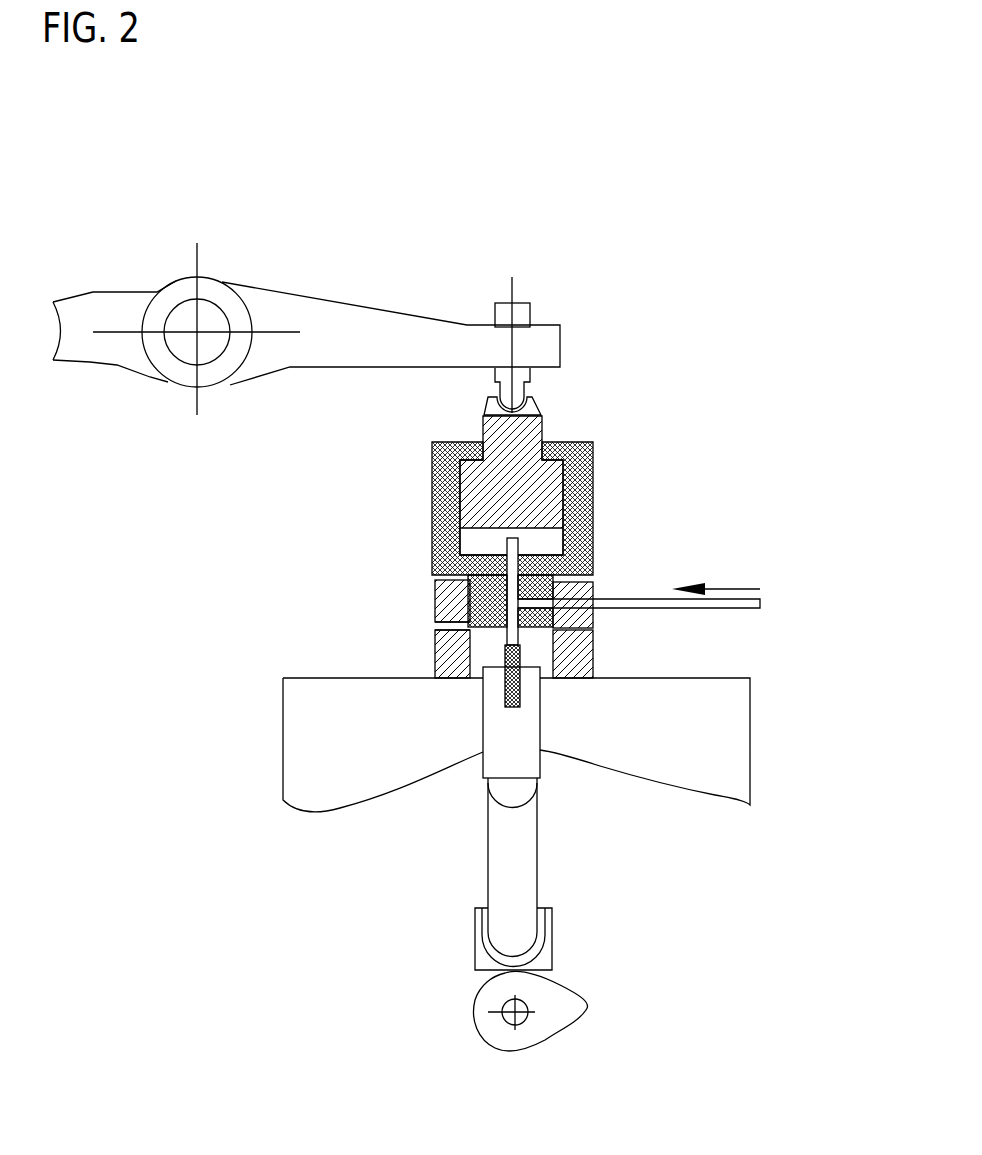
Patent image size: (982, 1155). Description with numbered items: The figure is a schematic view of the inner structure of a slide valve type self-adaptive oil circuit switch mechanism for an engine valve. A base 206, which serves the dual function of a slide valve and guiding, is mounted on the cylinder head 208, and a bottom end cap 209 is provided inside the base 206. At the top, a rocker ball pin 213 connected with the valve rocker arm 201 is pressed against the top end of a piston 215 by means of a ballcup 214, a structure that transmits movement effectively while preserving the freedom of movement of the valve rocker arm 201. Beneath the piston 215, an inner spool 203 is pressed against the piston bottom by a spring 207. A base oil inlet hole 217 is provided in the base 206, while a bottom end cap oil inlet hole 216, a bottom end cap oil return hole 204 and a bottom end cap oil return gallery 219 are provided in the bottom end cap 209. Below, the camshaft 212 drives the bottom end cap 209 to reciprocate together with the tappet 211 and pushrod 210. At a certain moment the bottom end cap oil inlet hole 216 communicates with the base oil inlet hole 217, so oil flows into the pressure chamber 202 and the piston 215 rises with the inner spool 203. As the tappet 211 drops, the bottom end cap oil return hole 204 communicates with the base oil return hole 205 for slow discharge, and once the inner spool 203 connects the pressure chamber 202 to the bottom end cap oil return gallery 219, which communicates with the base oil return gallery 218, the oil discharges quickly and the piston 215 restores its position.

The valve rocker arm 201 is at (313, 356).
The pressure chamber 202 is at (475, 546).
The inner spool 203 is at (505, 586).
The bottom end cap oil return hole 204 is at (480, 618).
The base oil return hole 205 is at (425, 628).
The base 206 is at (437, 665).
The spring 207 is at (505, 678).
The cylinder head 208 is at (352, 760).
The bottom end cap 209 is at (510, 795).
The pushrod 210 is at (512, 851).
The tappet 211 is at (483, 960).
The camshaft 212 is at (480, 995).
The rocker ball pin 213 is at (520, 388).
The ballcup 214 is at (532, 410).
The piston 215 is at (558, 515).
The bottom end cap oil inlet hole 216 is at (542, 598).
The base oil inlet hole 217 is at (593, 597).
The base oil return gallery 218 is at (577, 637).
The bottom end cap oil return gallery 219 is at (530, 633).